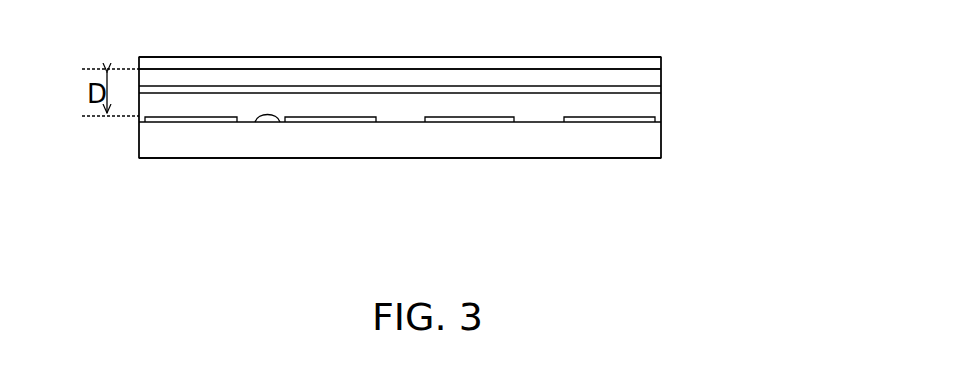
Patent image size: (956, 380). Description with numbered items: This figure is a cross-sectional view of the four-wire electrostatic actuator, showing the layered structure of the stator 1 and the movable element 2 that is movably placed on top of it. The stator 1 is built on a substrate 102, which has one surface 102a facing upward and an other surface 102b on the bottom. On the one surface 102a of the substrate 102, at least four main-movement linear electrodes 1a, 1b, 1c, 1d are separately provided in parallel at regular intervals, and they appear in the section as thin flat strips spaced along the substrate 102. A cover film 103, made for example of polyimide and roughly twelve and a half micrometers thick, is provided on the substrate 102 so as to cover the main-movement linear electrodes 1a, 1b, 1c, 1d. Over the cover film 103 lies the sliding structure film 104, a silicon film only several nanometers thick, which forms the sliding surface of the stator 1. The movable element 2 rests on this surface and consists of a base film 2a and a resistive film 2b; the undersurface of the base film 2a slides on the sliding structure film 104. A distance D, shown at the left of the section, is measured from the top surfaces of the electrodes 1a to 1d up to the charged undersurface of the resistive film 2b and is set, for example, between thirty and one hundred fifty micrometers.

The stator 1 is at (750, 60).
The movable element 2 is at (127, 57).
The base film 2a is at (661, 78).
The resistive film 2b is at (661, 62).
The substrate 102 is at (661, 140).
The one surface 102a is at (281, 123).
The other surface 102b is at (249, 159).
The cover film 103 is at (661, 107).
The sliding structure film 104 is at (661, 88).
The main-movement linear electrode 1a is at (193, 122).
The main-movement linear electrode 1b is at (333, 122).
The main-movement linear electrode 1c is at (470, 122).
The main-movement linear electrode 1d is at (608, 122).